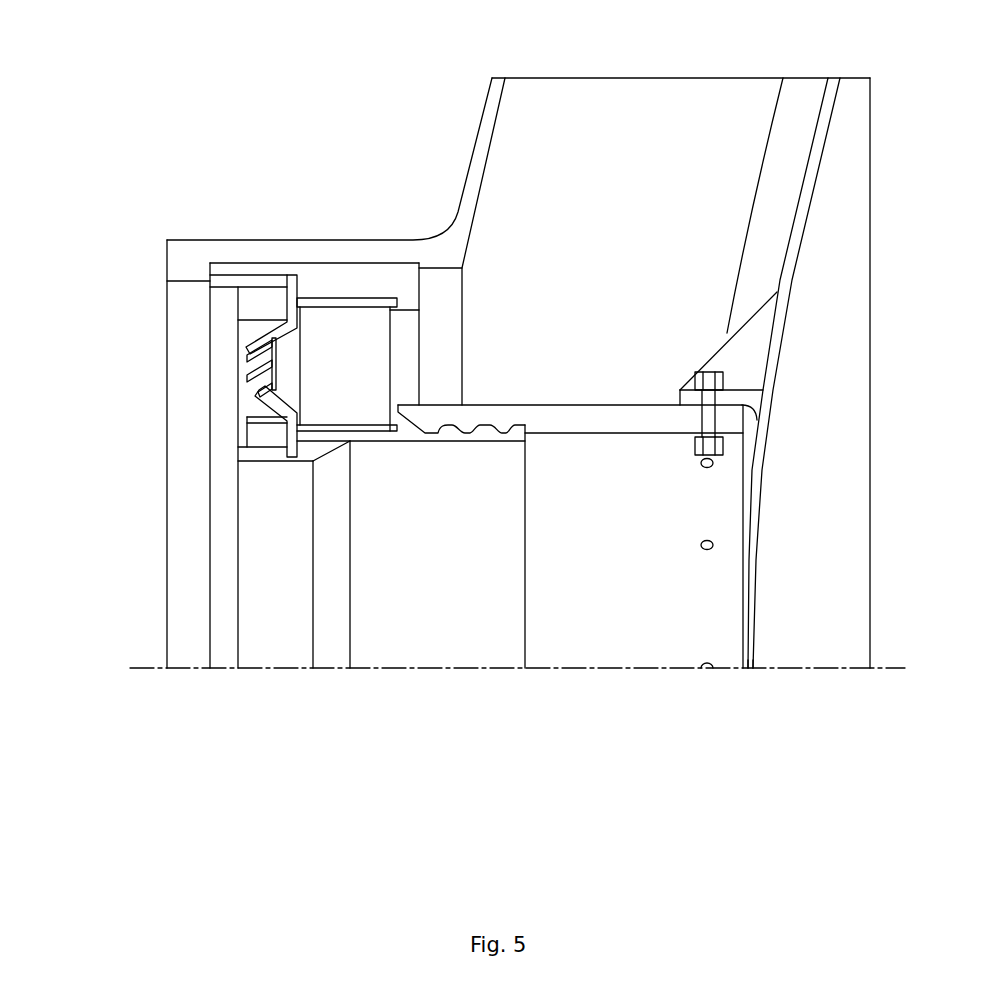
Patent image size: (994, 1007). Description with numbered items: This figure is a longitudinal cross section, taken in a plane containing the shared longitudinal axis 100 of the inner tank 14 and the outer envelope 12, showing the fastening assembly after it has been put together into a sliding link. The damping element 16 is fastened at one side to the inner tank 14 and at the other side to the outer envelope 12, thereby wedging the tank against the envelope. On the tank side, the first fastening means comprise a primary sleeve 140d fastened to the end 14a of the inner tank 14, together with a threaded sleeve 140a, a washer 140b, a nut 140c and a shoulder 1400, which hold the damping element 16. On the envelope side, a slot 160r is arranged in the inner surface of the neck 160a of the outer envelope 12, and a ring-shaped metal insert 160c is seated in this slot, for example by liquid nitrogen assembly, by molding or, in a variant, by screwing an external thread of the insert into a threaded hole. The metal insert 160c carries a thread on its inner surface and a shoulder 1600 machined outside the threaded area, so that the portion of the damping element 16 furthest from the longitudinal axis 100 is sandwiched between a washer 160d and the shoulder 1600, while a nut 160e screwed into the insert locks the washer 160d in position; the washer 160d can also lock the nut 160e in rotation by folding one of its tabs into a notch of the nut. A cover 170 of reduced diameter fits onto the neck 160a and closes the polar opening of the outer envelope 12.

The outer envelope 12 is at (457, 233).
The inner tank 14 is at (818, 140).
The end of the inner tank 14a is at (751, 668).
The damping element 16 is at (373, 330).
The longitudinal axis 100 is at (887, 669).
The threaded sleeve 140a is at (430, 645).
The washer 140b is at (268, 398).
The nut 140c is at (268, 433).
The primary sleeve 140d is at (580, 640).
The shoulder 1400 is at (398, 428).
The neck 160a is at (312, 247).
The metal insert 160c is at (349, 283).
The washer 160d is at (289, 322).
The nut 160e is at (230, 320).
The slot 160r is at (298, 263).
The shoulder 1600 is at (400, 300).
The cover 170 is at (224, 640).